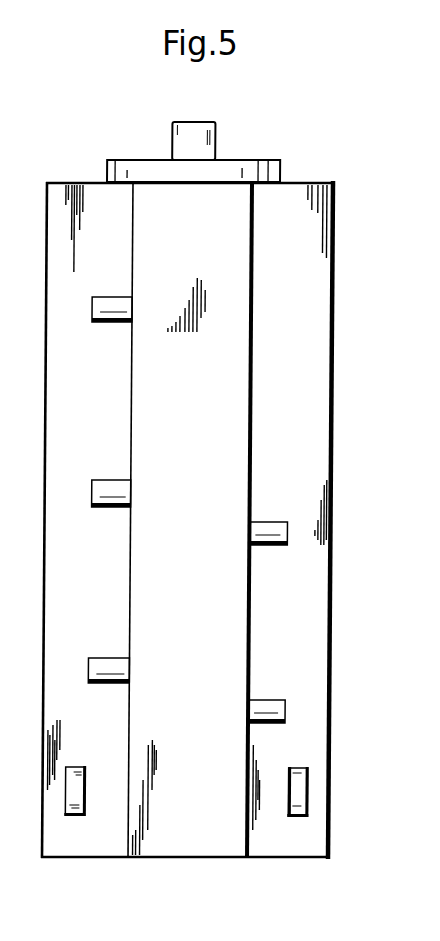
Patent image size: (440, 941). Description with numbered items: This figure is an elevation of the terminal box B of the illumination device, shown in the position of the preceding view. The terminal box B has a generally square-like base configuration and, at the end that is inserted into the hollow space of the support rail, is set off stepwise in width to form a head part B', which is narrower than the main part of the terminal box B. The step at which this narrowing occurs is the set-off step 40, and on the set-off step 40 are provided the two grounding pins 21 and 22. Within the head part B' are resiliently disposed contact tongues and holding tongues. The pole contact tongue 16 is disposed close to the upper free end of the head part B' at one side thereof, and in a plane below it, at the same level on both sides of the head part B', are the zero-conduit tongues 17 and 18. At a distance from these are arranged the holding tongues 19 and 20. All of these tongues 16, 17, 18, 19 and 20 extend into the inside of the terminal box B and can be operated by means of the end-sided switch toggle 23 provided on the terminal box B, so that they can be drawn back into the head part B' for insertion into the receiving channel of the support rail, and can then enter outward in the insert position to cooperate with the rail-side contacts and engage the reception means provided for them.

The pole contact tongue 16 is at (93, 675).
The zero-conduit tongue 17 is at (109, 485).
The zero-conduit tongue 18 is at (276, 528).
The holding tongue 19 is at (107, 302).
The holding tongue 20 is at (272, 723).
The grounding pin 21 is at (77, 792).
The grounding pin 22 is at (301, 809).
The switch toggle 23 is at (225, 165).
The set-off step 40 is at (98, 577).
The terminal box B is at (81, 610).
The head part B' is at (189, 384).